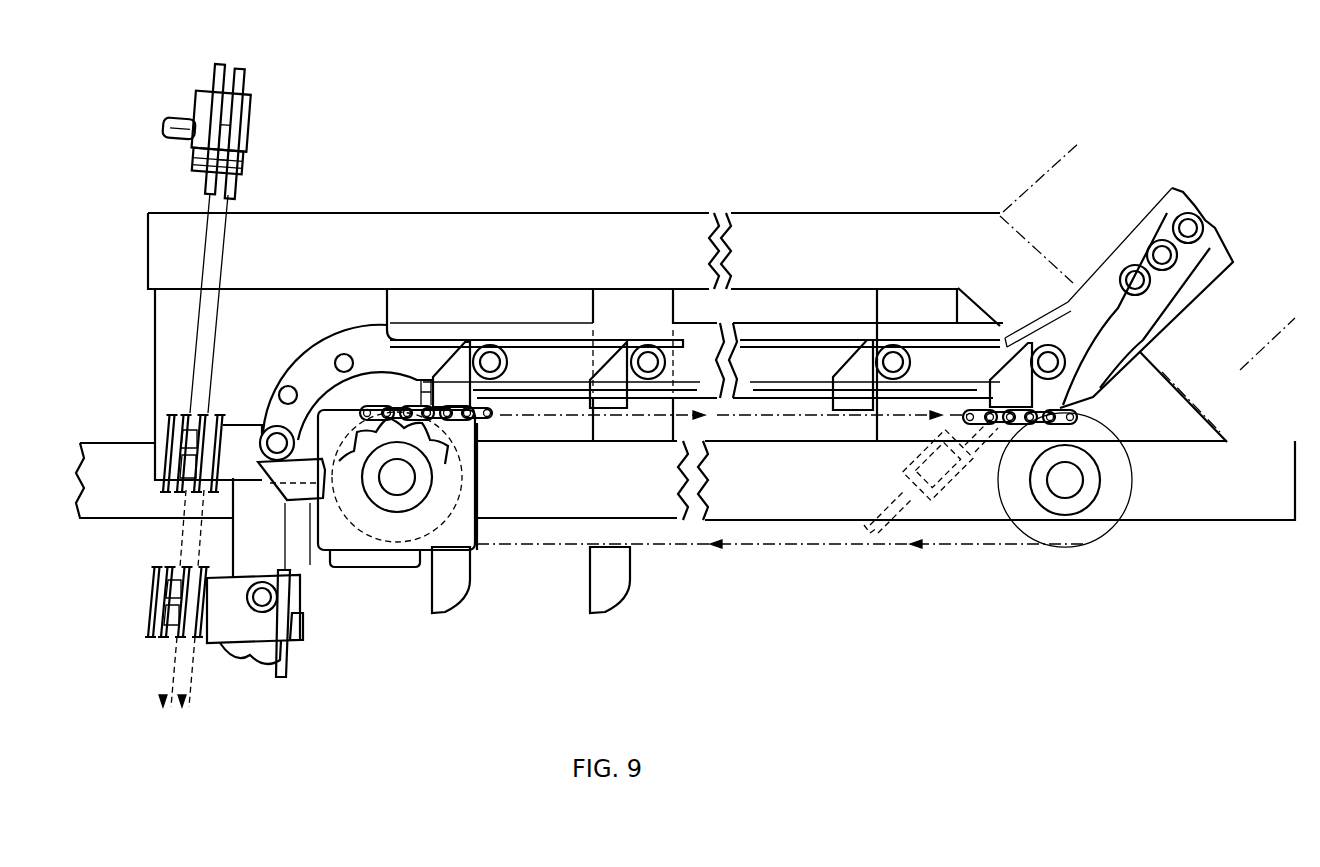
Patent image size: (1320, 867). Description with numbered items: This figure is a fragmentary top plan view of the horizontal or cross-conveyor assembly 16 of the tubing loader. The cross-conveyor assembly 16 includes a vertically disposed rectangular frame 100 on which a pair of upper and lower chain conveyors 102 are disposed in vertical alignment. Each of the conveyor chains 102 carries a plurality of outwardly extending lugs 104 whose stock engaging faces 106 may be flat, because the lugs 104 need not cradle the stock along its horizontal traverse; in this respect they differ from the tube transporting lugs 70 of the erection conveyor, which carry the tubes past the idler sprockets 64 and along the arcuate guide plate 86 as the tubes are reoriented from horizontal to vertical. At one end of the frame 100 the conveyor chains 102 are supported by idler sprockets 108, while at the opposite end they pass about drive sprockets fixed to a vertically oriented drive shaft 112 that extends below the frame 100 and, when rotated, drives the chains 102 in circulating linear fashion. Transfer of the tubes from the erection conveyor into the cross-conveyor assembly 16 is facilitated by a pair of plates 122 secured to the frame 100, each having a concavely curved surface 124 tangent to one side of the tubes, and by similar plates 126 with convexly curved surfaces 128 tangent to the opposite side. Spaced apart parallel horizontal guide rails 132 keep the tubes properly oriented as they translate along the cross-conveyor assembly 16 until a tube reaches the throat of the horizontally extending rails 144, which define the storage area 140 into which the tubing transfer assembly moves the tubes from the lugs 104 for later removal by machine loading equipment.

The horizontal or cross-conveyor assembly 16 is at (767, 590).
The idler sprockets 64 is at (247, 93).
The tube transporting lugs 70 is at (233, 620).
The guide plate 86 is at (250, 552).
The rectangular frame 100 is at (1228, 507).
The chain conveyors 102 is at (927, 547).
The lugs 104 is at (853, 373).
The stock engaging faces 106 is at (873, 343).
The idler sprockets 108 is at (1085, 523).
The drive shaft 112 is at (397, 492).
The plates 122 is at (312, 331).
The concavely curved surface 124 is at (305, 392).
The plates 126 is at (332, 553).
The convexly curved surfaces 128 is at (307, 423).
The horizontal guide rails 132 is at (520, 338).
The storage area 140 is at (1152, 177).
The horizontally extending rails 144 is at (1187, 273).